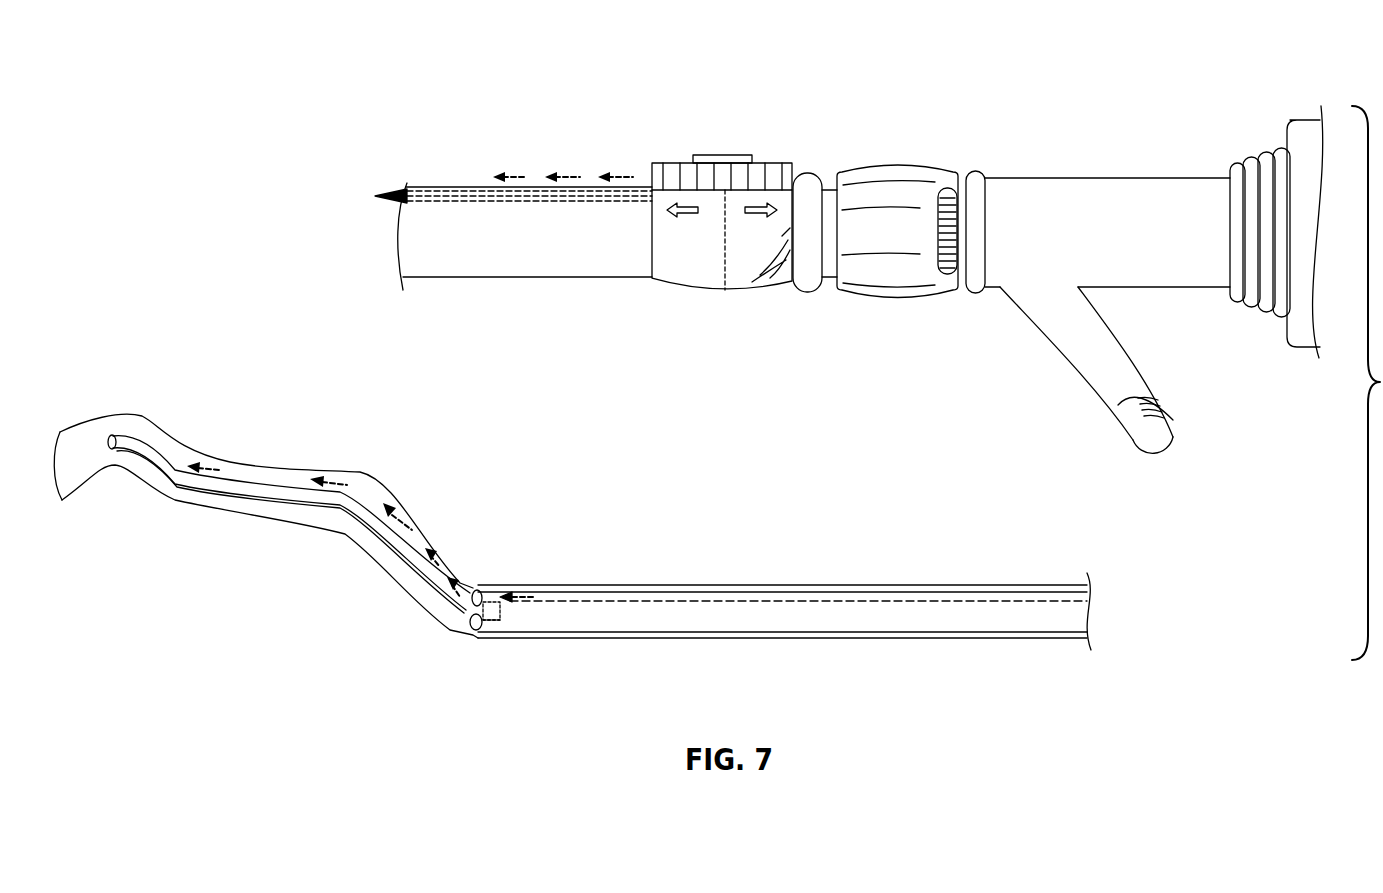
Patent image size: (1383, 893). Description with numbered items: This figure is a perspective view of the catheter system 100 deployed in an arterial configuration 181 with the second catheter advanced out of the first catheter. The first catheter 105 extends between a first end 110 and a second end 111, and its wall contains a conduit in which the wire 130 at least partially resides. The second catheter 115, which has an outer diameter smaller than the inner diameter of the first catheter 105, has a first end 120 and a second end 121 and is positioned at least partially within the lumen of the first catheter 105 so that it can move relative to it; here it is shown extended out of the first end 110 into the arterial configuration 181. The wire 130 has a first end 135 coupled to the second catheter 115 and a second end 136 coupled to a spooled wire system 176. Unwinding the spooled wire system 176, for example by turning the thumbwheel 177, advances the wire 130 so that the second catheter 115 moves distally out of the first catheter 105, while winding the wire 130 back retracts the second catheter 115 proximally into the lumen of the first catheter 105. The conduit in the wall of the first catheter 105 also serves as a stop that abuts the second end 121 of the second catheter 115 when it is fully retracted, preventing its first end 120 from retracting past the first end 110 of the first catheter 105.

The catheter system 100 is at (607, 86).
The first catheter 105 is at (468, 188).
The first end 110 is at (480, 580).
The second end 111 is at (649, 292).
The second catheter 115 is at (290, 488).
The first end 120 is at (112, 425).
The second end 121 is at (505, 626).
The wire 130 is at (438, 190).
The first end 135 is at (503, 607).
The second end 136 is at (918, 195).
The spooled wire system 176 is at (875, 166).
The thumbwheel 177 is at (727, 155).
The arterial configuration 181 is at (335, 530).